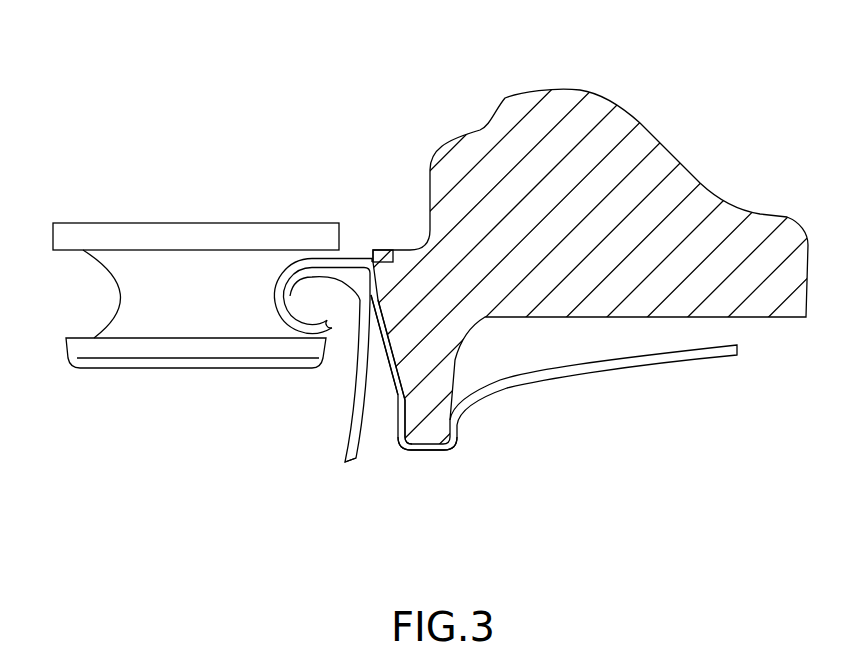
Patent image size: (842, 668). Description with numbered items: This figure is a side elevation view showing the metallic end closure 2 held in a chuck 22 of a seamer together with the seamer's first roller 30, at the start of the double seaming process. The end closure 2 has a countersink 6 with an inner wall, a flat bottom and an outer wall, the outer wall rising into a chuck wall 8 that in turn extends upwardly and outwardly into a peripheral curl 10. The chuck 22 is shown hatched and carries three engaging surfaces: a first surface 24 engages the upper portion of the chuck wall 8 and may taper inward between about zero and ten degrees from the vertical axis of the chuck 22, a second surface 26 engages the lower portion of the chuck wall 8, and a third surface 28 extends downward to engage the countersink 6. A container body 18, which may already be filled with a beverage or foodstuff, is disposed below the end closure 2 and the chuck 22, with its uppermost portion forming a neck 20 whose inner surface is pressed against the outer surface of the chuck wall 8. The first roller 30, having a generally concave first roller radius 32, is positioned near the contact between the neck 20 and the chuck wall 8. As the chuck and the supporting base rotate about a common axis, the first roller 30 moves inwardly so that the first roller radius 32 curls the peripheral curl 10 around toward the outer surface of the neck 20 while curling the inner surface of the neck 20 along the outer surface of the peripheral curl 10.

The end closure 2 is at (650, 404).
The countersink 6 is at (428, 452).
The chuck wall 8 is at (383, 338).
The peripheral curl 10 is at (277, 293).
The container body 18 is at (315, 450).
The neck 20 is at (352, 404).
The chuck 22 is at (665, 110).
The first surface 24 is at (390, 258).
The second surface 26 is at (394, 362).
The third surface 28 is at (412, 408).
The first roller 30 is at (182, 184).
The first roller radius 32 is at (116, 298).